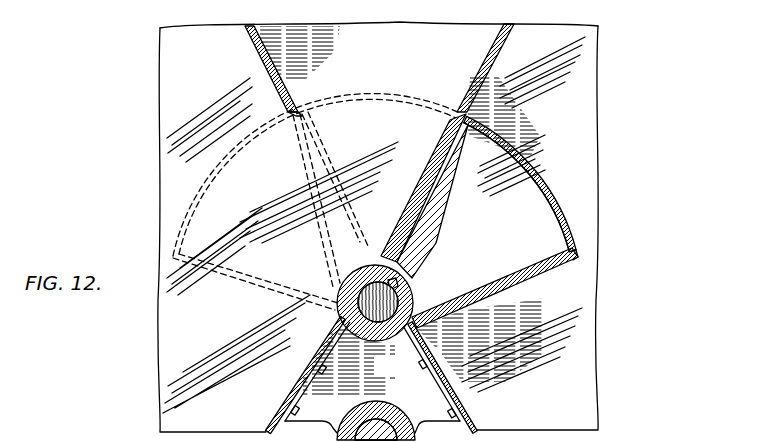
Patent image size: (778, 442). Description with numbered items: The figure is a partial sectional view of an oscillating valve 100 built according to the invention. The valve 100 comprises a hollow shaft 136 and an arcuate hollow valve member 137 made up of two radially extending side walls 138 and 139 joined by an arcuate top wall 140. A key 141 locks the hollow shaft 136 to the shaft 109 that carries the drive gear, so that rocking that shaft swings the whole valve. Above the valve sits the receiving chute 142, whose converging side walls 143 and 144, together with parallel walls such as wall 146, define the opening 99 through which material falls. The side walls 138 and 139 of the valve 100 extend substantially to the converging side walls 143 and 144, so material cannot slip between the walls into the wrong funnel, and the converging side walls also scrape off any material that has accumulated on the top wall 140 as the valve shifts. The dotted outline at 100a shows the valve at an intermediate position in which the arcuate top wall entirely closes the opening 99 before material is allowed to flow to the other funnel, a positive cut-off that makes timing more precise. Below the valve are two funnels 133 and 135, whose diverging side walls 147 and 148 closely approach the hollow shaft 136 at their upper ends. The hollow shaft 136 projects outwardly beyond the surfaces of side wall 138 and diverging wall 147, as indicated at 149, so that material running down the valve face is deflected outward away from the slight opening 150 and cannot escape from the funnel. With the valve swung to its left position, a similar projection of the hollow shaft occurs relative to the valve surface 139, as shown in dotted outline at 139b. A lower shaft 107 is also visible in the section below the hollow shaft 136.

The opening 99 is at (303, 111).
The valve 100 is at (221, 170).
The valve in dotted outline 100a is at (360, 97).
The shaft 107 is at (385, 422).
The shaft 109 is at (381, 318).
The funnel 133 is at (522, 363).
The funnel 135 is at (236, 358).
The hollow shaft 136 is at (343, 290).
The arcuate hollow valve member 137 is at (530, 167).
The side wall 138 is at (416, 186).
The side wall 139 is at (528, 278).
The valve surface in dotted outline 139b is at (326, 158).
The arcuate top wall 140 is at (568, 222).
The key 141 is at (397, 283).
The receiving chute 142 is at (478, 95).
The converging side wall 143 is at (274, 80).
The converging side wall 144 is at (484, 58).
The parallel wall 146 is at (382, 50).
The diverging side wall 147 is at (294, 391).
The diverging side wall 148 is at (470, 402).
The projection of hollow shaft 149 is at (366, 267).
The slight opening 150 is at (333, 309).